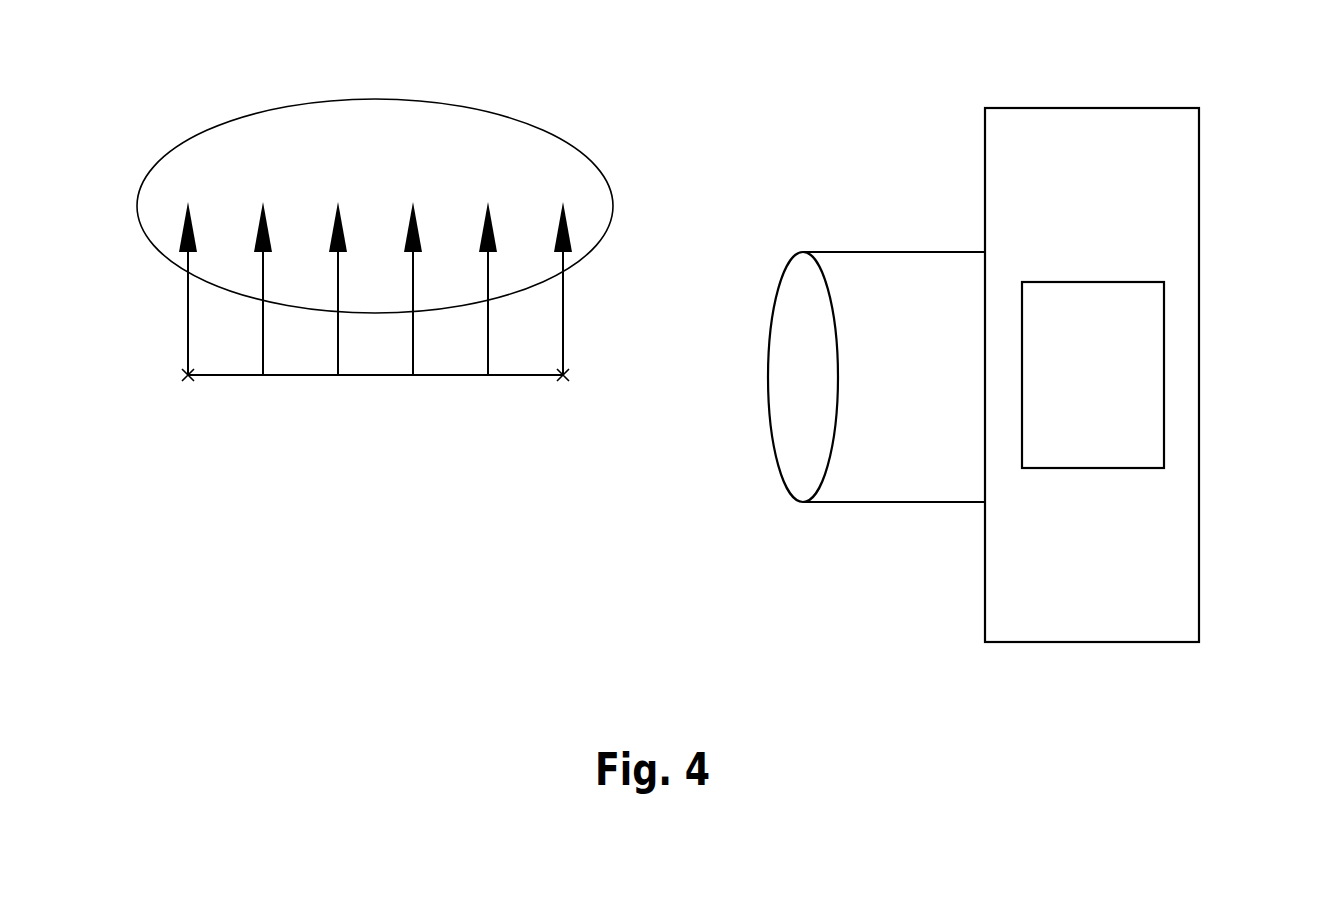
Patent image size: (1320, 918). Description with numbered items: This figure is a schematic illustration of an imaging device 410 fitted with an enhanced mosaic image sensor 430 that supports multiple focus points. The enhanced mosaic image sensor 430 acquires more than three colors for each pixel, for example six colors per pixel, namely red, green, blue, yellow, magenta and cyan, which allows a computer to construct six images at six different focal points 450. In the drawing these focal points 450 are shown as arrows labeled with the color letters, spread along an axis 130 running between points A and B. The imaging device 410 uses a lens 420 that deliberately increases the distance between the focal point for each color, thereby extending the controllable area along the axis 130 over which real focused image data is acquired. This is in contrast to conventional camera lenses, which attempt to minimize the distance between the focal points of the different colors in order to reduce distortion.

The focal points 450 is at (332, 97).
The axis 130 is at (394, 377).
The imaging device 410 is at (1199, 138).
The lens 420 is at (803, 467).
The enhanced mosaic image sensor 430 is at (1123, 470).